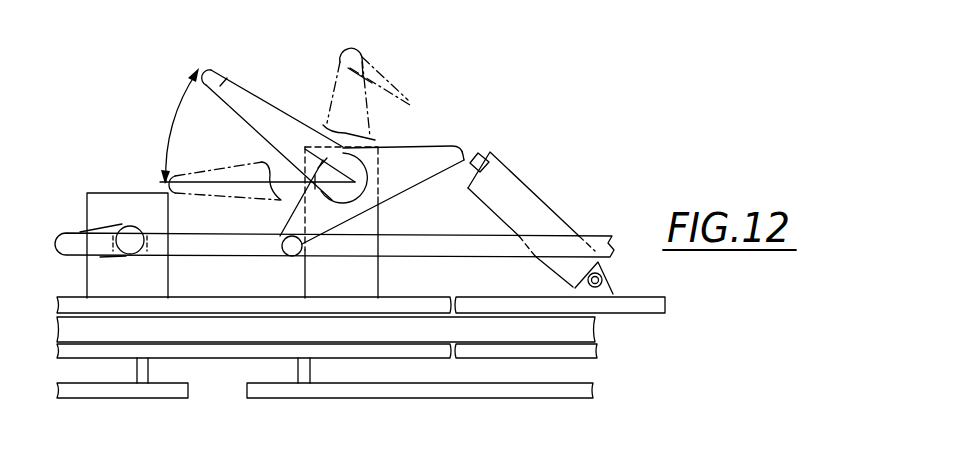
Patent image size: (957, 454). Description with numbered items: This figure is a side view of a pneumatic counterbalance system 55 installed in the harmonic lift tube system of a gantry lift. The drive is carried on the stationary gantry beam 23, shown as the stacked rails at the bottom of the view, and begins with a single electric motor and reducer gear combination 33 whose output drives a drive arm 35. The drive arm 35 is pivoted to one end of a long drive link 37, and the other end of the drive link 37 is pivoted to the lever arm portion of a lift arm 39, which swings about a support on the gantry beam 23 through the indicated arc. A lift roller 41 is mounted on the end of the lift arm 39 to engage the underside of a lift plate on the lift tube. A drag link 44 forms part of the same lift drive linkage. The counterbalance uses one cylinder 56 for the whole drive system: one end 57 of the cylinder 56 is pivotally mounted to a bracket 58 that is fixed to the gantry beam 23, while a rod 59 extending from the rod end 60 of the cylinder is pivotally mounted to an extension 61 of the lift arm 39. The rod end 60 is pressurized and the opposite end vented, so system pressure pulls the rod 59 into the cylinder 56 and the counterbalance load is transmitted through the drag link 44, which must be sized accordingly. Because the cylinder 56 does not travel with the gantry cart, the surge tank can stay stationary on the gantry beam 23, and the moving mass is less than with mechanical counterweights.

The gantry beam 23 is at (240, 333).
The electric motor and reducer gear combination 33 is at (128, 192).
The drive arm 35 is at (108, 228).
The drive link 37 is at (218, 246).
The lift arm 39 is at (270, 107).
The lift roller 41 is at (222, 72).
The drag link 44 is at (427, 247).
The pneumatic counterbalance system 55 is at (437, 78).
The cylinder 56 is at (523, 192).
The one end of the cylinder 57 is at (607, 278).
The bracket 58 is at (600, 290).
The rod 59 is at (472, 163).
The rod end 60 is at (463, 180).
The extension 61 is at (415, 148).